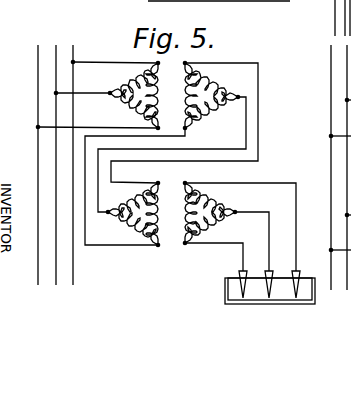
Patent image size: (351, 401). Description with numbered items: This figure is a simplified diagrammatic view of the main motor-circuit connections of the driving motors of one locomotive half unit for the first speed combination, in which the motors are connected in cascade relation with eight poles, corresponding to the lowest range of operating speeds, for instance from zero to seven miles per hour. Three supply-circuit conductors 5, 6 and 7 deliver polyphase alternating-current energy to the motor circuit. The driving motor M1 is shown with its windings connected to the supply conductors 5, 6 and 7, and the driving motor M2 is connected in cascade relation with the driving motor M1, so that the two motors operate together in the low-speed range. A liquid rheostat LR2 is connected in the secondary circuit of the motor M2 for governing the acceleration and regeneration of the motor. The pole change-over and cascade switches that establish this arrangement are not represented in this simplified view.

The supply-circuit conductor 5 is at (38, 56).
The supply-circuit conductor 6 is at (56, 75).
The supply-circuit conductor 7 is at (73, 100).
The driving motor M1 is at (177, 103).
The driving motor M2 is at (175, 214).
The liquid rheostat LR2 is at (257, 286).